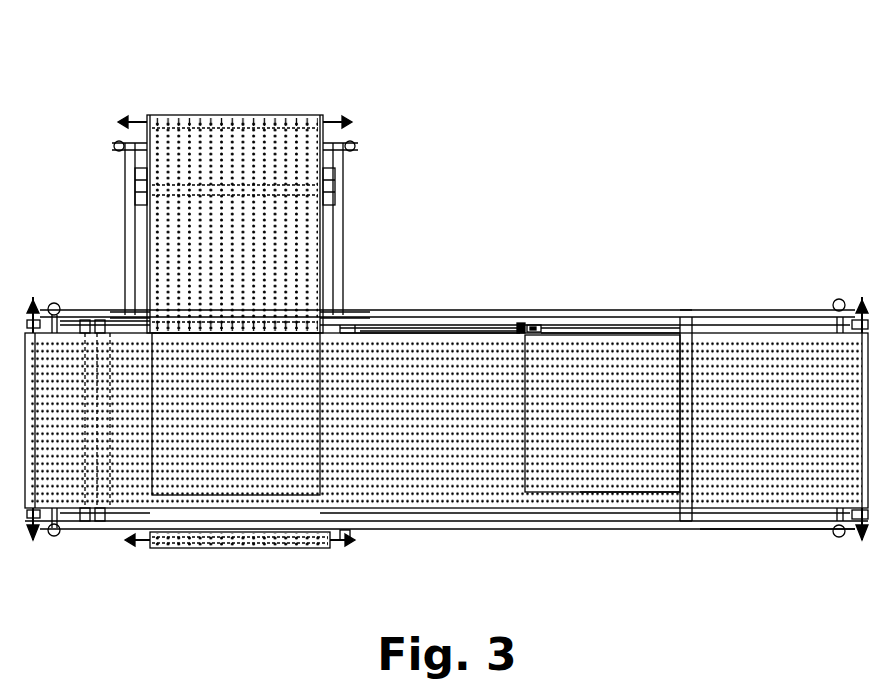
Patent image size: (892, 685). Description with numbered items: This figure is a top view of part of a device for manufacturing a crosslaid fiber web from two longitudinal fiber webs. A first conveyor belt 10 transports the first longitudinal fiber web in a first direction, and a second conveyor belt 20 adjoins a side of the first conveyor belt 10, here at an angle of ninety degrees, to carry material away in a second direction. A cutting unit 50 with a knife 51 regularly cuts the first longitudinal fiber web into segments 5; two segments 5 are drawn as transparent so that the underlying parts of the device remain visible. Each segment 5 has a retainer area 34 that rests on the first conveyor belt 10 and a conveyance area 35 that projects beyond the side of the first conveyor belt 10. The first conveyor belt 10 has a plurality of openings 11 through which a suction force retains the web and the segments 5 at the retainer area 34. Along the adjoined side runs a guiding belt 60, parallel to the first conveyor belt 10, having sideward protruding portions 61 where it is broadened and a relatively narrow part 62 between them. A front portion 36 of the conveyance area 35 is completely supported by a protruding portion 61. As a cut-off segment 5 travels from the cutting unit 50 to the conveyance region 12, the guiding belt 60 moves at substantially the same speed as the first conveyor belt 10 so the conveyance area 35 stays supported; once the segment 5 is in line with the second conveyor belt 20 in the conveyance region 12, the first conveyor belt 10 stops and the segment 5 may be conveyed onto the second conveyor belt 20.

The second conveyor belt 20 is at (270, 125).
The first conveyor belt 10 is at (790, 367).
The openings 11 is at (798, 498).
The conveyance region 12 is at (218, 432).
The segment 5 is at (597, 338).
The retainer area 34 is at (598, 453).
The conveyance area 35 is at (650, 330).
The front portion 36 is at (536, 330).
The cutting unit 50 is at (698, 288).
The knife 51 is at (694, 552).
The guiding belt 60 is at (412, 333).
The protruding portion 61 is at (520, 331).
The narrow part 62 is at (452, 333).